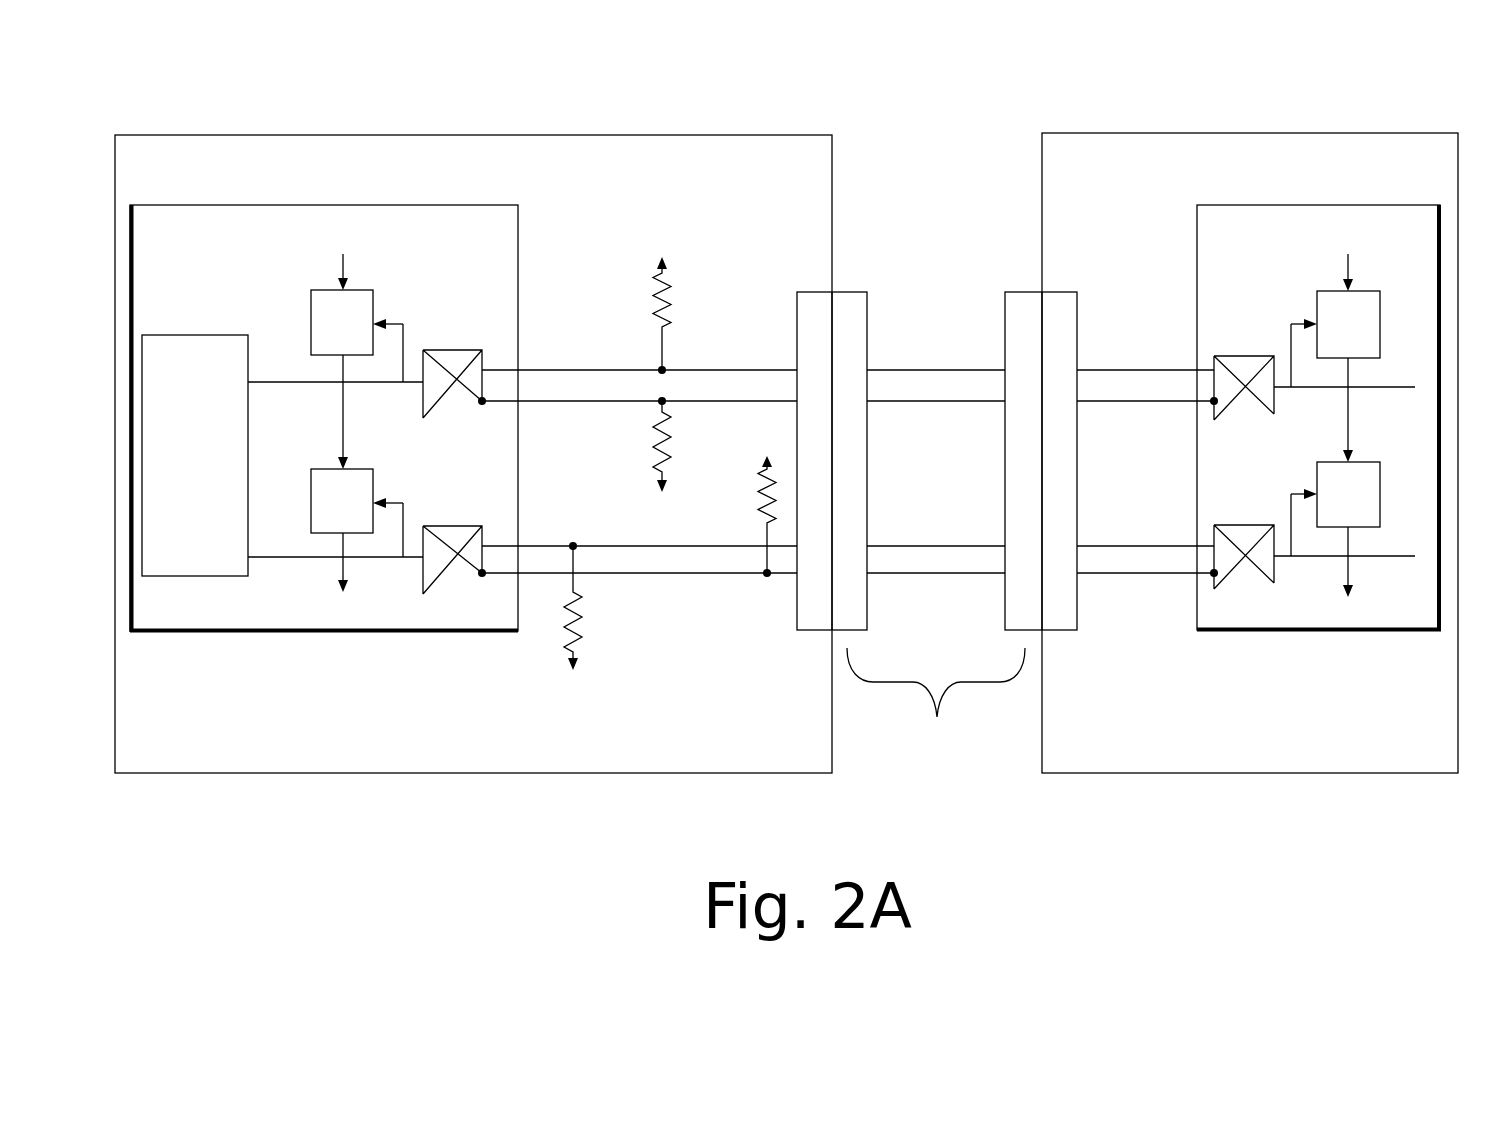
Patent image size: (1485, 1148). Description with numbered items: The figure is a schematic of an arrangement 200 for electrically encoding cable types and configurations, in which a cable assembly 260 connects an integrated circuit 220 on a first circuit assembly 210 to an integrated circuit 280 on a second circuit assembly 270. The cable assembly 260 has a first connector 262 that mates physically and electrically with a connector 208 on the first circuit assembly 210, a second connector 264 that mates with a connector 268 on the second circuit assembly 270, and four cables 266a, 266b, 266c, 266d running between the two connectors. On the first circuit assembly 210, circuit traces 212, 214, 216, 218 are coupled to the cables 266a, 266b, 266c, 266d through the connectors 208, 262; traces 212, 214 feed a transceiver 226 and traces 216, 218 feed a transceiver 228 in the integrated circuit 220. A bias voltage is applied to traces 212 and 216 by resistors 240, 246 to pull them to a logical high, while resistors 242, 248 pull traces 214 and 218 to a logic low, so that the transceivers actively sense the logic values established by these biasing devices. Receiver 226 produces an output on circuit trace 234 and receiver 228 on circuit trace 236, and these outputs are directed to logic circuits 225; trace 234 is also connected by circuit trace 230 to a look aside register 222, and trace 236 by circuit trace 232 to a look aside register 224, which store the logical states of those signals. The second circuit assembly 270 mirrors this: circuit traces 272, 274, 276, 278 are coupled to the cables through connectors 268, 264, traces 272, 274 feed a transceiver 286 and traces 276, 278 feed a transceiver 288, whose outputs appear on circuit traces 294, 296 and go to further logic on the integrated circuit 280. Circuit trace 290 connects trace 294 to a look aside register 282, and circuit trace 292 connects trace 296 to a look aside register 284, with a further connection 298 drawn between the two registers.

The system 200 is at (207, 76).
The first circuit assembly 210 is at (582, 167).
The second circuit assembly 270 is at (1355, 167).
The integrated circuit 220 is at (435, 236).
The integrated circuit 280 is at (1429, 236).
The logic circuits 225 is at (176, 493).
The look aside register 222 is at (323, 334).
The look aside register 224 is at (323, 512).
The transceiver 226 is at (426, 350).
The transceiver 228 is at (426, 526).
The circuit trace 230 is at (403, 324).
The circuit trace 232 is at (403, 503).
The circuit trace 234 is at (291, 382).
The circuit trace 236 is at (324, 557).
The circuit trace 212 is at (536, 370).
The circuit trace 214 is at (536, 401).
The circuit trace 216 is at (536, 546).
The circuit trace 218 is at (666, 573).
The resistor 240 is at (734, 312).
The resistor 242 is at (647, 467).
The resistor 246 is at (742, 504).
The resistor 248 is at (646, 627).
The connector 208 is at (815, 630).
The first connector 262 is at (850, 292).
The second connector 264 is at (1023, 292).
The connector 268 is at (1063, 630).
The cable 266a is at (883, 370).
The cable 266b is at (883, 546).
The cable 266c is at (883, 401).
The cable 266d is at (883, 573).
The cable assembly 260 is at (917, 796).
The circuit trace 272 is at (1127, 370).
The circuit trace 274 is at (1127, 401).
The circuit trace 276 is at (1127, 546).
The circuit trace 278 is at (1127, 573).
The transceiver 286 is at (1214, 356).
The transceiver 288 is at (1214, 525).
The circuit trace 290 is at (1291, 324).
The circuit trace 292 is at (1291, 494).
The look aside register 282 is at (1329, 335).
The look aside register 284 is at (1329, 506).
The circuit trace 294 is at (1361, 387).
The circuit trace 296 is at (1361, 556).
The signal line 298 is at (1348, 432).